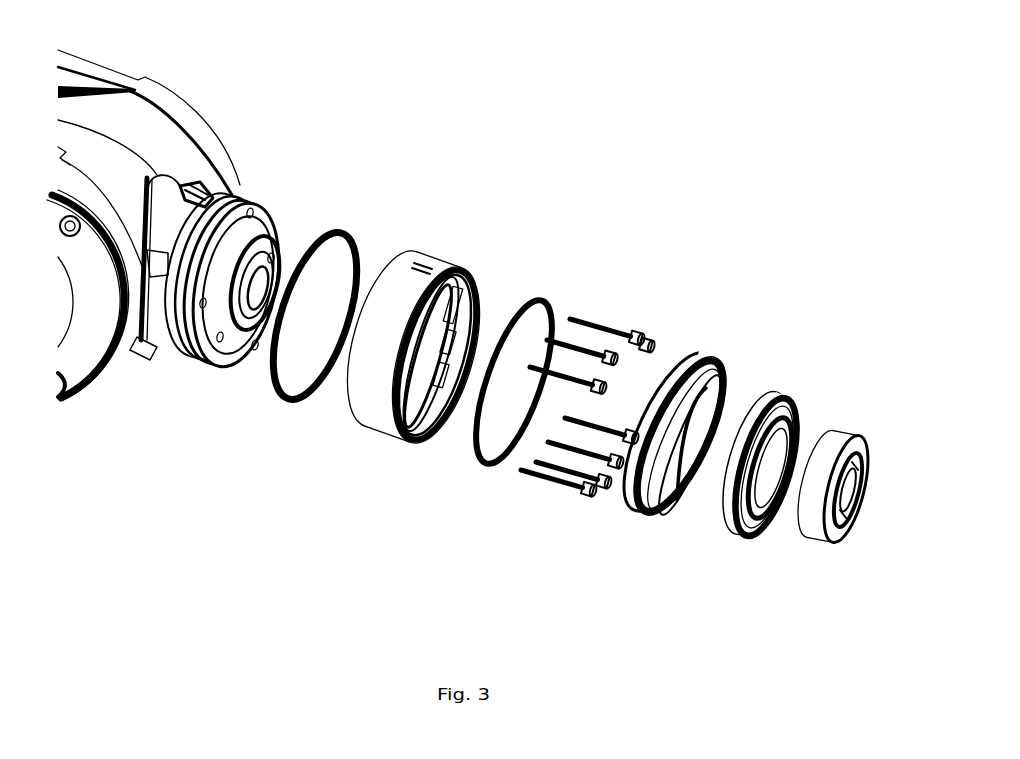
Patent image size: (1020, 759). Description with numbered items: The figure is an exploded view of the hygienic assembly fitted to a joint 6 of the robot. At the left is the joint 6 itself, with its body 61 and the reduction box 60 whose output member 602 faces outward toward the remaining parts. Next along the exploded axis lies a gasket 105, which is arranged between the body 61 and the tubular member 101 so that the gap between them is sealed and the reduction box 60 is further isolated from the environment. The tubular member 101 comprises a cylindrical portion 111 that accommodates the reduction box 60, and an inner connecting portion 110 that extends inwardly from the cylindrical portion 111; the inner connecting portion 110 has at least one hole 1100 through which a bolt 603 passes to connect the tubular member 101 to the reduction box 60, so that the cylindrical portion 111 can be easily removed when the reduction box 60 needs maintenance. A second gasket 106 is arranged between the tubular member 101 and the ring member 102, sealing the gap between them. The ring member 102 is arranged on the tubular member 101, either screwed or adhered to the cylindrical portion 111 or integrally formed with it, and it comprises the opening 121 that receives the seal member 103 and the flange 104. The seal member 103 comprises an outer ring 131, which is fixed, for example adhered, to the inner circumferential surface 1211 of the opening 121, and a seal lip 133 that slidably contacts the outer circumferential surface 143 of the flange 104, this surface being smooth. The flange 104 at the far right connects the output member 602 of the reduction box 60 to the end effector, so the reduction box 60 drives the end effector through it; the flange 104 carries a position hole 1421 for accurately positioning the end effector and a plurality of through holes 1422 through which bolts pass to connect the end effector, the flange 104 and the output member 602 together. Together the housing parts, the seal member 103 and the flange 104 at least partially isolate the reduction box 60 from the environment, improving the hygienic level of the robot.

The joint 6 is at (505, 85).
The reduction box 60 is at (245, 263).
The body 61 is at (168, 213).
The output member 602 is at (270, 262).
The gasket 105 is at (343, 232).
The tubular member 101 is at (425, 345).
The cylindrical portion 111 is at (473, 293).
The inner connecting portion 110 is at (455, 320).
The hole 1100 is at (423, 400).
The gasket 106 is at (547, 300).
The bolt 603 is at (605, 337).
The ring member 102 is at (677, 433).
The opening 121 is at (678, 462).
The inner circumferential surface 1211 is at (692, 478).
The seal member 103 is at (773, 440).
The outer ring 131 is at (776, 405).
The seal lip 133 is at (753, 518).
The flange 104 is at (840, 459).
The outer circumferential surface 143 is at (838, 441).
The position hole 1421 is at (846, 492).
The through holes 1422 is at (820, 520).